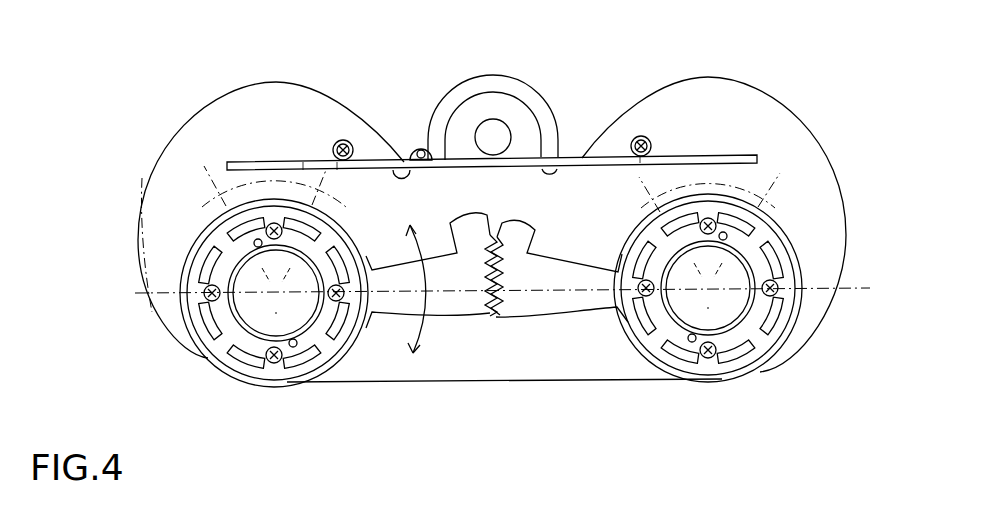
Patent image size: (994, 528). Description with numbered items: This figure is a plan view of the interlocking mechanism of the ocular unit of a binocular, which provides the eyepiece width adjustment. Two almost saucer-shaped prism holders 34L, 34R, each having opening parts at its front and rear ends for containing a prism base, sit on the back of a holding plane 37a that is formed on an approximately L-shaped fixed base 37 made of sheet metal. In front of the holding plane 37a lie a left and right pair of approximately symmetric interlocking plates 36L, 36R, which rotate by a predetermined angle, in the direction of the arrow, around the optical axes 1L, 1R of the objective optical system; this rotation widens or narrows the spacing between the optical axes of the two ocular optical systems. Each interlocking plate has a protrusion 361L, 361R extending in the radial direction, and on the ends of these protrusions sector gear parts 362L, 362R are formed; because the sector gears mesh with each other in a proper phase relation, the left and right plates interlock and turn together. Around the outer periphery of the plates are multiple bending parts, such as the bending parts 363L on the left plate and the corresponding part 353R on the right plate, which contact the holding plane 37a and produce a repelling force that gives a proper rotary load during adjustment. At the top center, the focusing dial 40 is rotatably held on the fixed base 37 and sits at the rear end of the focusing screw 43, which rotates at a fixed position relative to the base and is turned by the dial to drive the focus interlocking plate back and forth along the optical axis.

The optical axis of the right objective optical system 1R is at (263, 177).
The optical axis of the left objective optical system 1L is at (753, 193).
The right prism holder 34R is at (163, 173).
The left prism holder 34L is at (830, 186).
The right interlocking plate 36R is at (290, 367).
The left interlocking plate 36L is at (733, 373).
The right ring slot 353R is at (223, 360).
The bending parts of the left interlocking plate 363L is at (670, 357).
The protrusion of the right interlocking plate 361R is at (455, 302).
The protrusion of the left interlocking plate 361L is at (575, 303).
The right sector gear 362R is at (492, 310).
The left sector gear 362L is at (505, 320).
The fixed base 37 is at (765, 188).
The holding plane 37a is at (613, 365).
The focusing dial 40 is at (537, 103).
The focusing screw 43 is at (477, 137).